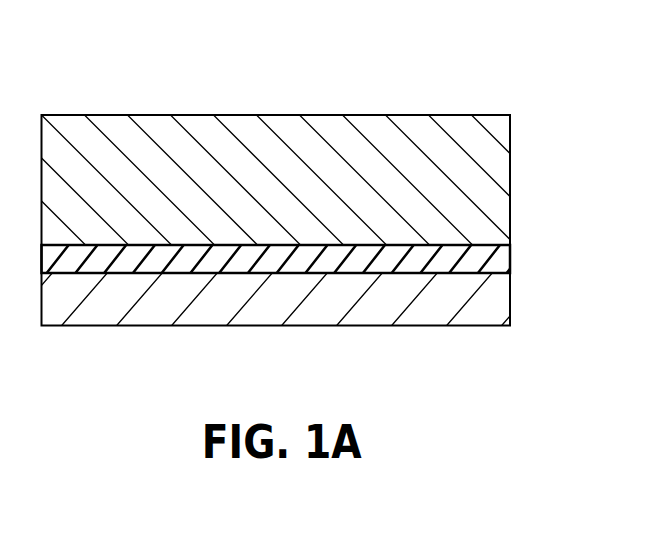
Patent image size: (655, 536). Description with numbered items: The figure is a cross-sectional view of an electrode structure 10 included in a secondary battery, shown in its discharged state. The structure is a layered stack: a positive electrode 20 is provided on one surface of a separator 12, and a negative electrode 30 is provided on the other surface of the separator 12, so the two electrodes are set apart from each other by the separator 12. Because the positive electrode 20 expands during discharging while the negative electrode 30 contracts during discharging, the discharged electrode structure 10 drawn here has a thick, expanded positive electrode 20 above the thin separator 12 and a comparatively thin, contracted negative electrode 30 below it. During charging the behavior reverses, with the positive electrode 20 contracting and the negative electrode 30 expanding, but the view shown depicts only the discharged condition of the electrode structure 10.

The electrode structure 10 is at (297, 108).
The positive electrode 20 is at (503, 191).
The separator 12 is at (503, 262).
The negative electrode 30 is at (503, 305).